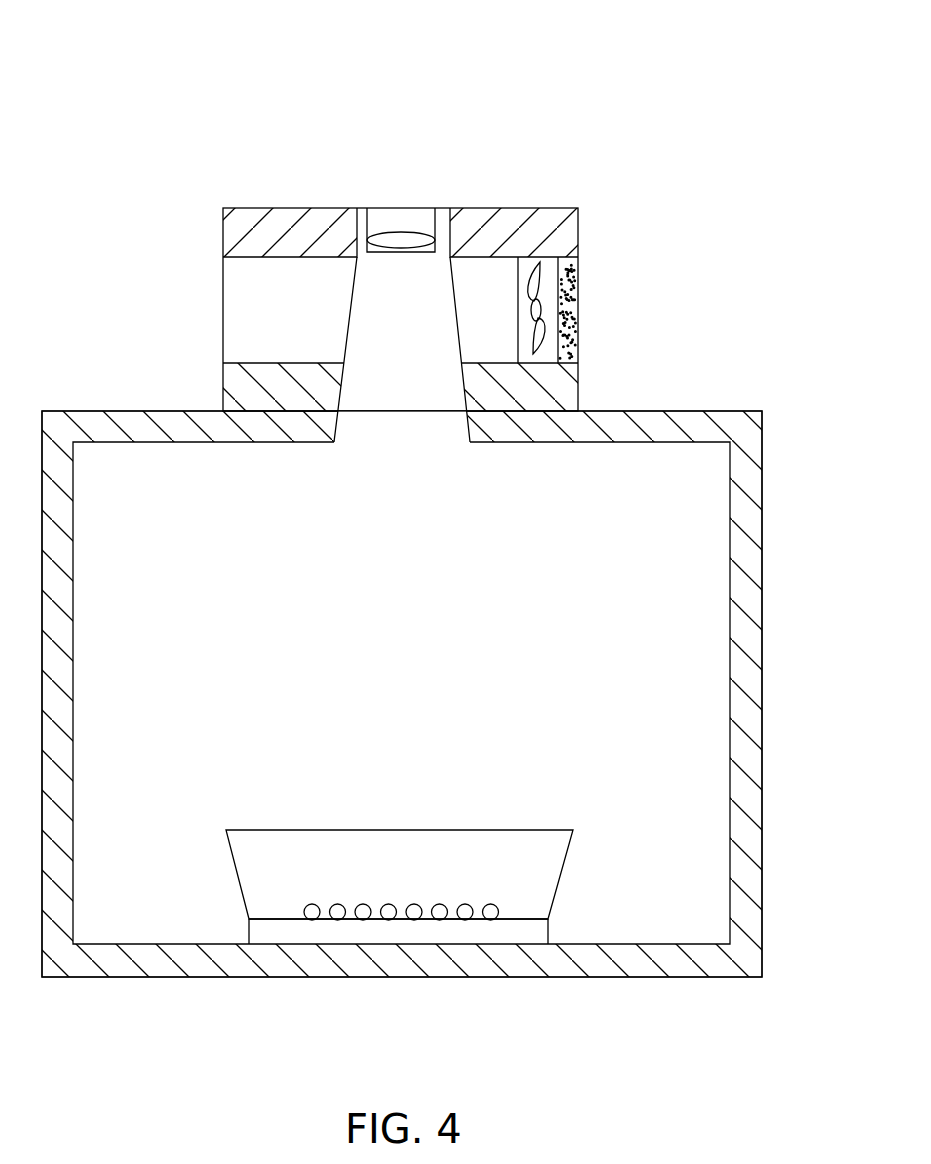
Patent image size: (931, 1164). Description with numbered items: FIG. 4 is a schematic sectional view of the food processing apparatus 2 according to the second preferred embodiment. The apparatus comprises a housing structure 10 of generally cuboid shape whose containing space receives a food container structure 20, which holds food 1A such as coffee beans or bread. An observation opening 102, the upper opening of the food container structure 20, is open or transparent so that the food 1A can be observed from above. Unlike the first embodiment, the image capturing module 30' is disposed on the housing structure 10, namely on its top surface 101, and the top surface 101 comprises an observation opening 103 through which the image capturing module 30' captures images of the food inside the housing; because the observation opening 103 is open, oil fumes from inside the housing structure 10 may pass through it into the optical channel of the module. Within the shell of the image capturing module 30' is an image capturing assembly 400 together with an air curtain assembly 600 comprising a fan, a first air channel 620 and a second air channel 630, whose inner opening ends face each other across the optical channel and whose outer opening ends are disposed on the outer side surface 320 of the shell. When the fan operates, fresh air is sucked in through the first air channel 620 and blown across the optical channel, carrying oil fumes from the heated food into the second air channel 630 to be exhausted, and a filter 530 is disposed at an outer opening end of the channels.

The food processing apparatus 2 is at (88, 35).
The housing structure 10 is at (688, 425).
The top surface 101 is at (750, 410).
The observation opening 102 is at (500, 830).
The observation opening 103 is at (365, 427).
The food container structure 20 is at (465, 930).
The food 1A is at (310, 920).
The image capturing module 30' is at (378, 256).
The outer side surface 320 is at (558, 208).
The image capturing assembly 400 is at (399, 217).
The filter 530 is at (578, 276).
The air curtain assembly 600 is at (498, 358).
The first air channel 620 is at (488, 277).
The second air channel 630 is at (260, 312).